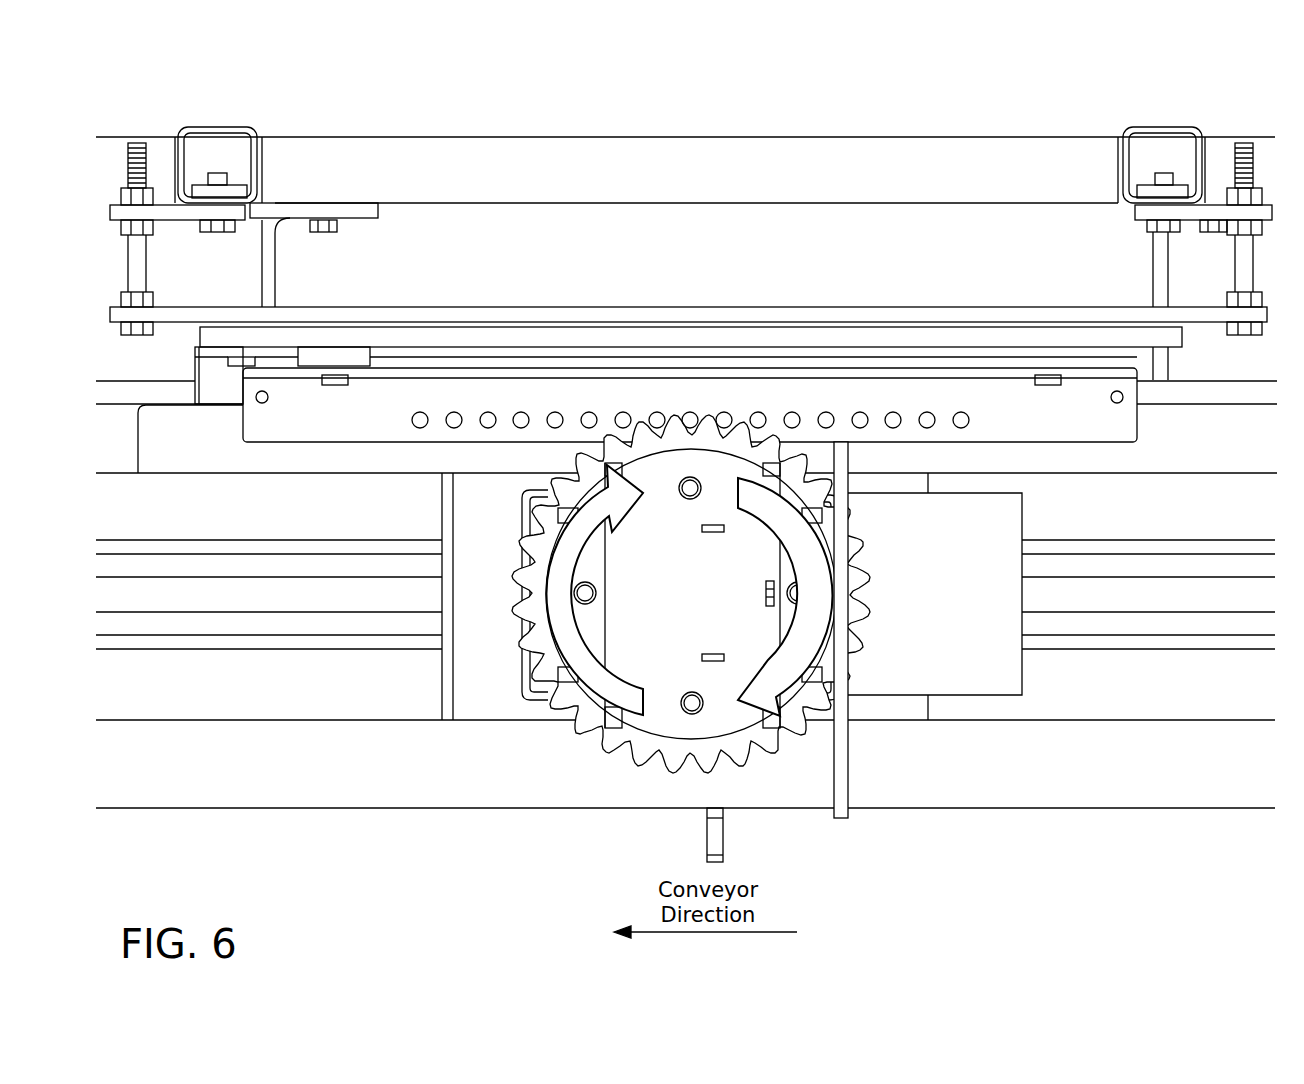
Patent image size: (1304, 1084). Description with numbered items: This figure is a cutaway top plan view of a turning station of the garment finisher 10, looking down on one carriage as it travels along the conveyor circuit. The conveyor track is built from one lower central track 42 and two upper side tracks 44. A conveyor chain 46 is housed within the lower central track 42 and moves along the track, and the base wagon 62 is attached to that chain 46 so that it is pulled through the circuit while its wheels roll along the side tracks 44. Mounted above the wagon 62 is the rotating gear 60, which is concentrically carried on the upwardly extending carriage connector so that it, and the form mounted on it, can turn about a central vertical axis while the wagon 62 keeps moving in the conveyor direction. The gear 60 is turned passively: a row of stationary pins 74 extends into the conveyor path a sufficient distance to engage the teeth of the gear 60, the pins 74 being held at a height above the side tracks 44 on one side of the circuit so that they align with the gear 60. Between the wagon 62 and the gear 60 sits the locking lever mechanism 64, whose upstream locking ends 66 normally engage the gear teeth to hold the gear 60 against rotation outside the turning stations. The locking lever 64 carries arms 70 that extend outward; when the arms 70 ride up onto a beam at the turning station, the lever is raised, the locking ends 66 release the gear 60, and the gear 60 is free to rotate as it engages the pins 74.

The garment finisher 10 is at (116, 117).
The lower central track 42 is at (124, 556).
The upper side tracks 44 is at (145, 405).
The conveyor chain 46 is at (204, 578).
The rotating gear 60 is at (777, 752).
The base wagon 62 is at (473, 668).
The locking lever mechanism 64 is at (977, 542).
The upstream locking ends 66 is at (520, 547).
The arms 70 is at (848, 757).
The stationary pins 74 is at (893, 412).